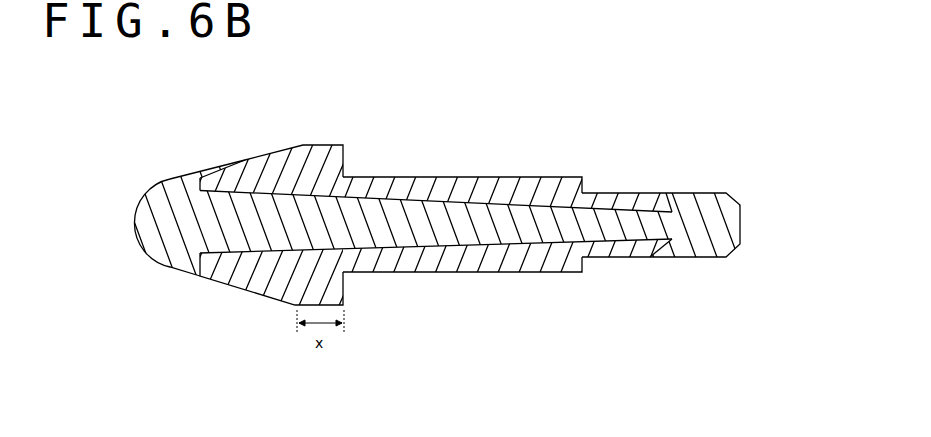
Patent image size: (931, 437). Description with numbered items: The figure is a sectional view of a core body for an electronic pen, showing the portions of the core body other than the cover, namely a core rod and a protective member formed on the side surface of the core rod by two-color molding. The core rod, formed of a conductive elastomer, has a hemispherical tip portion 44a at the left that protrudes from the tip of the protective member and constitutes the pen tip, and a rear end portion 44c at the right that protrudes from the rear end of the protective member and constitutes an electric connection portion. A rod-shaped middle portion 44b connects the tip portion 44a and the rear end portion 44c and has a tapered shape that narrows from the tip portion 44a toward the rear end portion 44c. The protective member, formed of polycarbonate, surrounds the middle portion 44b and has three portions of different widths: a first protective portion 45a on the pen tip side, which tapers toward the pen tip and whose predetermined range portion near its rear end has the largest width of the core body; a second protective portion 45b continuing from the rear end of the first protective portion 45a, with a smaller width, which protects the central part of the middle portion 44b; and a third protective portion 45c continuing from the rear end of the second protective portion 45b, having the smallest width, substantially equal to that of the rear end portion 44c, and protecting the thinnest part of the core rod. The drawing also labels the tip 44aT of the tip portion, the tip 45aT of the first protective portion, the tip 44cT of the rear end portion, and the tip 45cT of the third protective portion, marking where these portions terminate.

The tip portion 44a is at (172, 256).
The tip of nose portion 44aT is at (196, 176).
The middle portion 44b is at (427, 240).
The rear end portion 44c is at (700, 238).
The tip of rear portion 44cT is at (670, 258).
The first protective portion 45a is at (307, 157).
The tip of sleeve front portion 45aT is at (213, 173).
The second protective portion 45b is at (412, 190).
The third protective portion 45c is at (630, 198).
The tip of sleeve rear portion 45cT is at (648, 256).